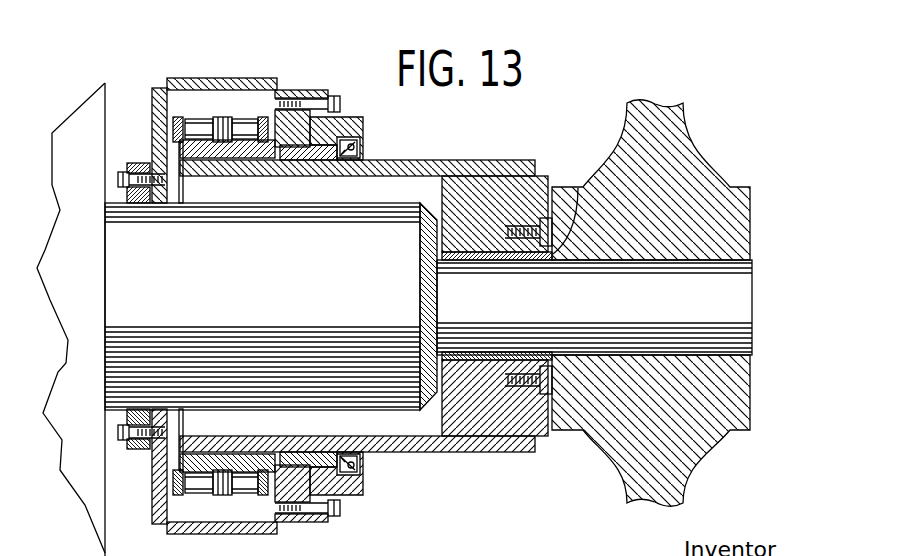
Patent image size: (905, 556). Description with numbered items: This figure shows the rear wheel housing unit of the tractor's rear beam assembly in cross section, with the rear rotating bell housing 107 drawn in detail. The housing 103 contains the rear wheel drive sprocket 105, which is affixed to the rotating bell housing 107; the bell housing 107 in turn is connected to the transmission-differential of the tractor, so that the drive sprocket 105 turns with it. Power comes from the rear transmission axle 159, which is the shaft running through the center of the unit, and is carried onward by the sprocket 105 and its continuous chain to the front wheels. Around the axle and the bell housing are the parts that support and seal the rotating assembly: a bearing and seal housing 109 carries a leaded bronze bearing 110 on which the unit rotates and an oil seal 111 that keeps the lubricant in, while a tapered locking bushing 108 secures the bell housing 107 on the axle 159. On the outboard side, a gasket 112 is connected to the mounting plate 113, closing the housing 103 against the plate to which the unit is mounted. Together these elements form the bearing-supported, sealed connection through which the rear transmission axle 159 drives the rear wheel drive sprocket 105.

The housing 103 is at (205, 79).
The rear wheel drive sprocket 105 is at (247, 118).
The rotating bell housing 107 is at (485, 160).
The tapered locking bushing 108 is at (578, 187).
The bearing and seal housing 109 is at (350, 117).
The leaded bronze bearing 110 is at (311, 117).
The oil seal 111 is at (358, 150).
The gasket 112 is at (148, 163).
The mounting plate 113 is at (128, 165).
The rear transmission axle 159 is at (752, 307).